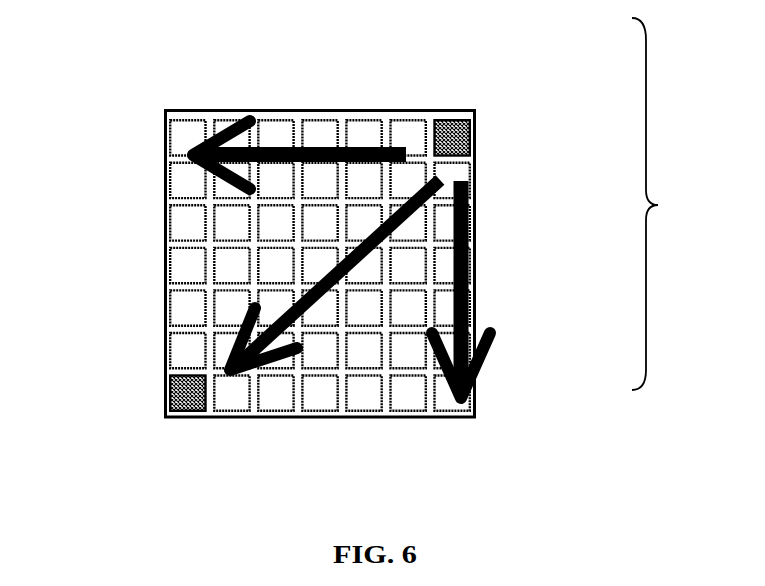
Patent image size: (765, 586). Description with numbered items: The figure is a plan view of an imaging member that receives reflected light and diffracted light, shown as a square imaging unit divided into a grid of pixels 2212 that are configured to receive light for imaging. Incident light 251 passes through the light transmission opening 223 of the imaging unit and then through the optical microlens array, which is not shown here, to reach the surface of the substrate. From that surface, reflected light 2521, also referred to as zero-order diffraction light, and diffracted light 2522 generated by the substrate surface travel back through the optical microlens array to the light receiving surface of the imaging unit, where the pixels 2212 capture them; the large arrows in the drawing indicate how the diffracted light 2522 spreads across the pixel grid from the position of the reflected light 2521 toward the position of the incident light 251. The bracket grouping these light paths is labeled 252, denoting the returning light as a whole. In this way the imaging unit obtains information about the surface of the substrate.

The light transmission opening 223 is at (165, 378).
The pixels 2212 is at (185, 260).
The reflected light 2521 is at (477, 125).
The incident light 251 is at (165, 410).
The diffracted light 2522 is at (362, 150).
The moving path 252 is at (674, 204).